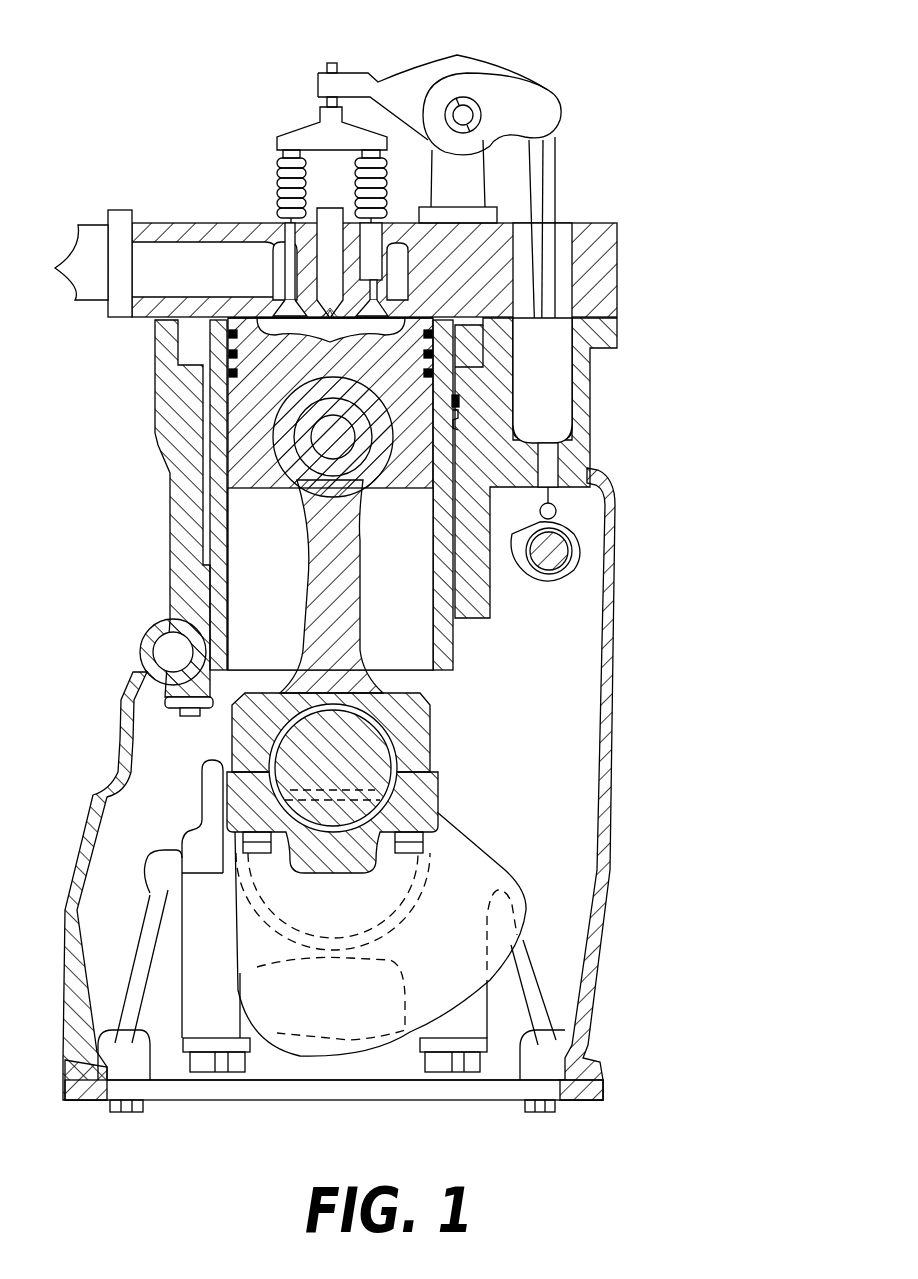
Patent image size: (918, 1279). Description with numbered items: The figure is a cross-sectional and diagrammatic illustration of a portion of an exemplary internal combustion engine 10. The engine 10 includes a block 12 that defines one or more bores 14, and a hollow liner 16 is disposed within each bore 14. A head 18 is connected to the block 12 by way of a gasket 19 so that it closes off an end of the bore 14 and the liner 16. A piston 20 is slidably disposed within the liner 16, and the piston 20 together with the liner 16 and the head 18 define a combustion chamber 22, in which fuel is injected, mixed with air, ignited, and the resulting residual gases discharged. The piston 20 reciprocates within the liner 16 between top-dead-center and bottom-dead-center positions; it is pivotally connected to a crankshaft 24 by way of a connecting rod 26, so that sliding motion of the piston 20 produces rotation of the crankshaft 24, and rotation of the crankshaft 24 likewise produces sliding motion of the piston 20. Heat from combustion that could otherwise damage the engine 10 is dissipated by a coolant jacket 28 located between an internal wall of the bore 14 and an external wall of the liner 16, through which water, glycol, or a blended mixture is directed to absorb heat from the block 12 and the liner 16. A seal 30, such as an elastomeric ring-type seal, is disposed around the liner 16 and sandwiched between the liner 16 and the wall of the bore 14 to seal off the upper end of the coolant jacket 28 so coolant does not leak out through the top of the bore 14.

The internal combustion engine 10 is at (659, 26).
The block 12 is at (498, 466).
The bore 14 is at (453, 620).
The liner 16 is at (449, 686).
The head 18 is at (478, 278).
The gasket 19 is at (197, 320).
The piston 20 is at (339, 355).
The combustion chamber 22 is at (273, 324).
The crankshaft 24 is at (343, 757).
The connecting rod 26 is at (341, 569).
The coolant jacket 28 is at (528, 517).
The seal 30 is at (460, 398).